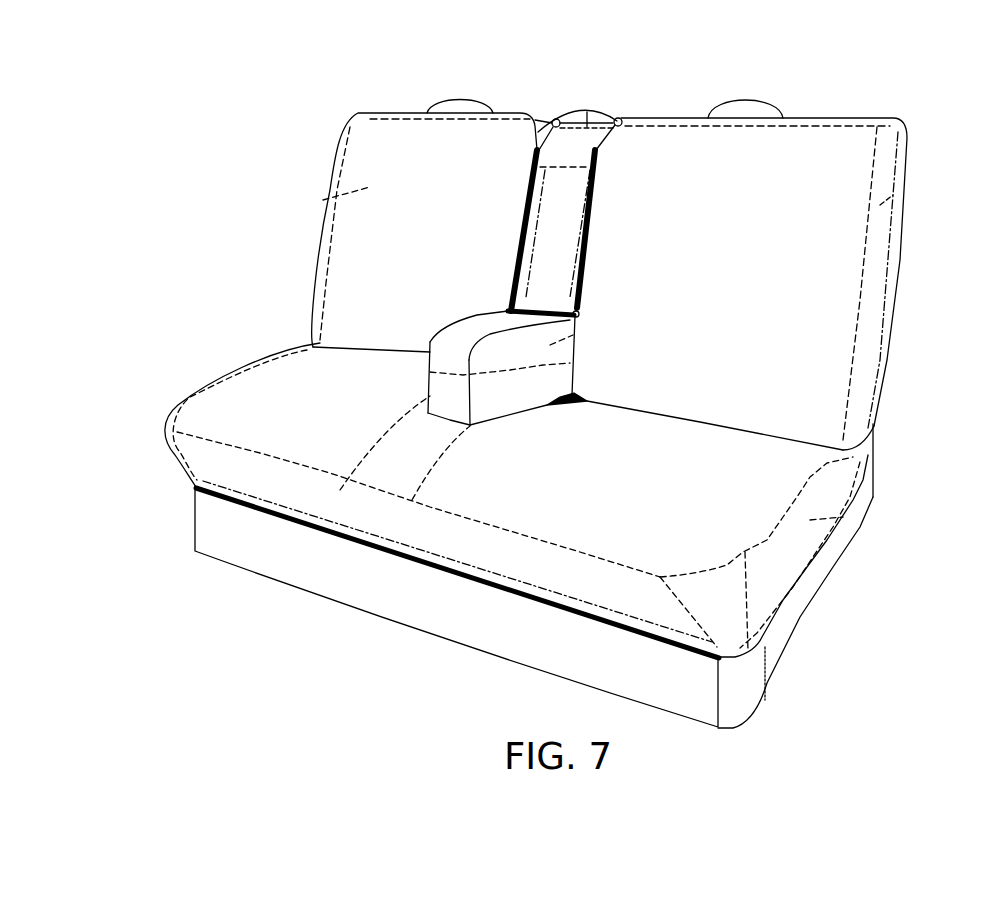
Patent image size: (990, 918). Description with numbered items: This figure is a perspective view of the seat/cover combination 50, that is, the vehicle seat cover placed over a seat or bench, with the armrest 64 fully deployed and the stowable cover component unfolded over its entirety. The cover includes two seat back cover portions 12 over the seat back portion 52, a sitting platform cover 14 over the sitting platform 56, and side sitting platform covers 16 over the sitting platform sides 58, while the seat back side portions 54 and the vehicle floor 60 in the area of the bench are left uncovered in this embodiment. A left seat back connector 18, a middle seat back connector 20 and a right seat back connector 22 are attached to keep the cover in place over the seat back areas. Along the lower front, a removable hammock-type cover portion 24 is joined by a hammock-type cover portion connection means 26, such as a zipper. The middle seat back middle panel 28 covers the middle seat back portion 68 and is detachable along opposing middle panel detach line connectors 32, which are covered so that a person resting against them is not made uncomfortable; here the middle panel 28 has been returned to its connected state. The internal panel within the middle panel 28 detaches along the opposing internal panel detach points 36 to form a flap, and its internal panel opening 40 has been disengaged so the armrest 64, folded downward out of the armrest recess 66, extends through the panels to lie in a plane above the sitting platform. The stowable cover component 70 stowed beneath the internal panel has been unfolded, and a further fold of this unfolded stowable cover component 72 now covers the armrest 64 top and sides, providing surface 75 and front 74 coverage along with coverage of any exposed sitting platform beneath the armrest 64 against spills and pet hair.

The seat/cover combination 50 is at (158, 123).
The seat back cover portions 12 is at (354, 113).
The sitting platform cover 14 is at (173, 402).
The side sitting platform covers 16 is at (820, 567).
The left seat back connector 18 is at (460, 98).
The middle seat back connector 20 is at (620, 118).
The right seat back connector 22 is at (742, 99).
The removable hammock-type cover portion 24 is at (207, 540).
The hammock-type cover portion connection means 26 is at (195, 489).
The middle seat back middle panel 28 is at (585, 368).
The middle panel detach line connectors 32 is at (555, 119).
The internal panel detach points 36 is at (536, 142).
The internal panel opening 40 is at (507, 303).
The seat back portion 52 is at (323, 200).
The seat back side portions 54 is at (907, 194).
The sitting platform 56 is at (242, 385).
The sitting platform sides 58 is at (885, 498).
The vehicle floor 60 is at (797, 627).
The armrest 64 is at (582, 336).
The armrest recess 66 is at (588, 292).
The middle seat back portion 68 is at (587, 112).
The stowable cover component 70 is at (513, 389).
The unfolded stowable cover component 72 is at (430, 388).
The front 74 is at (431, 343).
The surface 75 is at (450, 322).